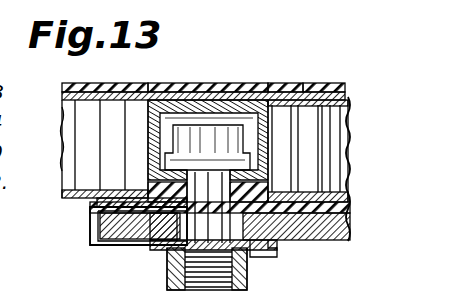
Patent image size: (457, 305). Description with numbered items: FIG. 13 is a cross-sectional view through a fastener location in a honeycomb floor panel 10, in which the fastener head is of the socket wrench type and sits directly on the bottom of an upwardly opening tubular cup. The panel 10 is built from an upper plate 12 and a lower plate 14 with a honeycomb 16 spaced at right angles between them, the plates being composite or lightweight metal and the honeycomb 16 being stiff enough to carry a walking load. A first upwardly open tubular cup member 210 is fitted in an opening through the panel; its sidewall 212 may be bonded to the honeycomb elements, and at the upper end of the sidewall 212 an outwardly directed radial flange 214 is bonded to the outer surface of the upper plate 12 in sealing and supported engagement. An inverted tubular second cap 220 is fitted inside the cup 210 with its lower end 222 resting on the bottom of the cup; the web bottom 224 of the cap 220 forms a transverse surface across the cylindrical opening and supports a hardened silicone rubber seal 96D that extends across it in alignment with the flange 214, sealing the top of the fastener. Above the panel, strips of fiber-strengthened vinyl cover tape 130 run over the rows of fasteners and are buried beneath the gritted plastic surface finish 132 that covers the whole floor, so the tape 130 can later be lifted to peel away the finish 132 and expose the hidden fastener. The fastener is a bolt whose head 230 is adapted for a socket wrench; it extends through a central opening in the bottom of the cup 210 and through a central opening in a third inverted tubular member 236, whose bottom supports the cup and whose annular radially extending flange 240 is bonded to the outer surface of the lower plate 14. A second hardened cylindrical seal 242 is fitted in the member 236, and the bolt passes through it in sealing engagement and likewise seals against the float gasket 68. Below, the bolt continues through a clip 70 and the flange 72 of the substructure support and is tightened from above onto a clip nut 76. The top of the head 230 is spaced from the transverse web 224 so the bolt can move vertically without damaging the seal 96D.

The honeycomb floor panel 10 is at (355, 150).
The upper plate 12 is at (335, 95).
The lower plate 14 is at (336, 190).
The honeycomb 16 is at (332, 173).
The float gasket 68 is at (350, 210).
The clip 70 is at (92, 243).
The flange of substructure support 72 is at (330, 238).
The clip nut 76 is at (240, 284).
The hardened silicone rubber seal 96D is at (265, 88).
The vinyl cover tape 130 is at (195, 85).
The gritted plastic surface finish 132 is at (95, 83).
The first upwardly open tubular cup member 210 is at (274, 144).
The sidewall 212 is at (148, 127).
The outwardly directed radial flange 214 is at (320, 87).
The inverted tubular second cap 220 is at (225, 88).
The lower end of second cap 222 is at (150, 165).
The web bottom 224 is at (345, 112).
The bolt head 230 is at (128, 240).
The third inverted tubular member 236 is at (274, 185).
The annular radially extending flange 240 is at (97, 201).
The second hardened cylindrical seal 242 is at (260, 245).